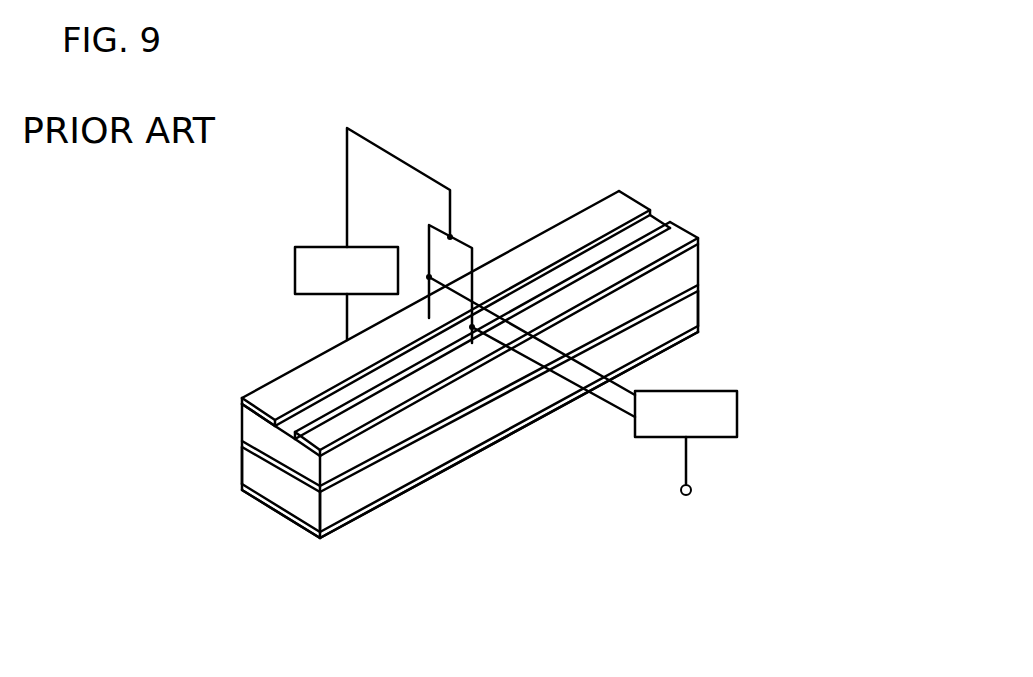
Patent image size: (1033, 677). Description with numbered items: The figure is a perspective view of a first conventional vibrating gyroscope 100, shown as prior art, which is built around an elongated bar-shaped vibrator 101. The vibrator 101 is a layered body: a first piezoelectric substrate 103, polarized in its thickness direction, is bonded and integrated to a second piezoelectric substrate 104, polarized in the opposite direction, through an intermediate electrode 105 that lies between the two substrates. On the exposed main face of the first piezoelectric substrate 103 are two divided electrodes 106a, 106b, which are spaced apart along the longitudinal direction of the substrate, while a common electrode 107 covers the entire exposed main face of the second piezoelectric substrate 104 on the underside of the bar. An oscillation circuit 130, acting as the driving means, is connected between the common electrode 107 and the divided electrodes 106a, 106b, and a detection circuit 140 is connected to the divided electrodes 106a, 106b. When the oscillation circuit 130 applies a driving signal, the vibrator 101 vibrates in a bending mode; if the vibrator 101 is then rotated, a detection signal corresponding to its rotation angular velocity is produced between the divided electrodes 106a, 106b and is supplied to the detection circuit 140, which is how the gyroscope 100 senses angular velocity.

The vibrating gyroscope 100 is at (622, 116).
The vibrator 101 is at (626, 188).
The first piezoelectric substrate 103 is at (685, 270).
The second piezoelectric substrate 104 is at (688, 317).
The intermediate electrode 105 is at (699, 287).
The divided electrode 106a is at (263, 398).
The divided electrode 106b is at (335, 417).
The common electrode 107 is at (262, 507).
The oscillation circuit 130 is at (295, 262).
The detection circuit 140 is at (737, 428).